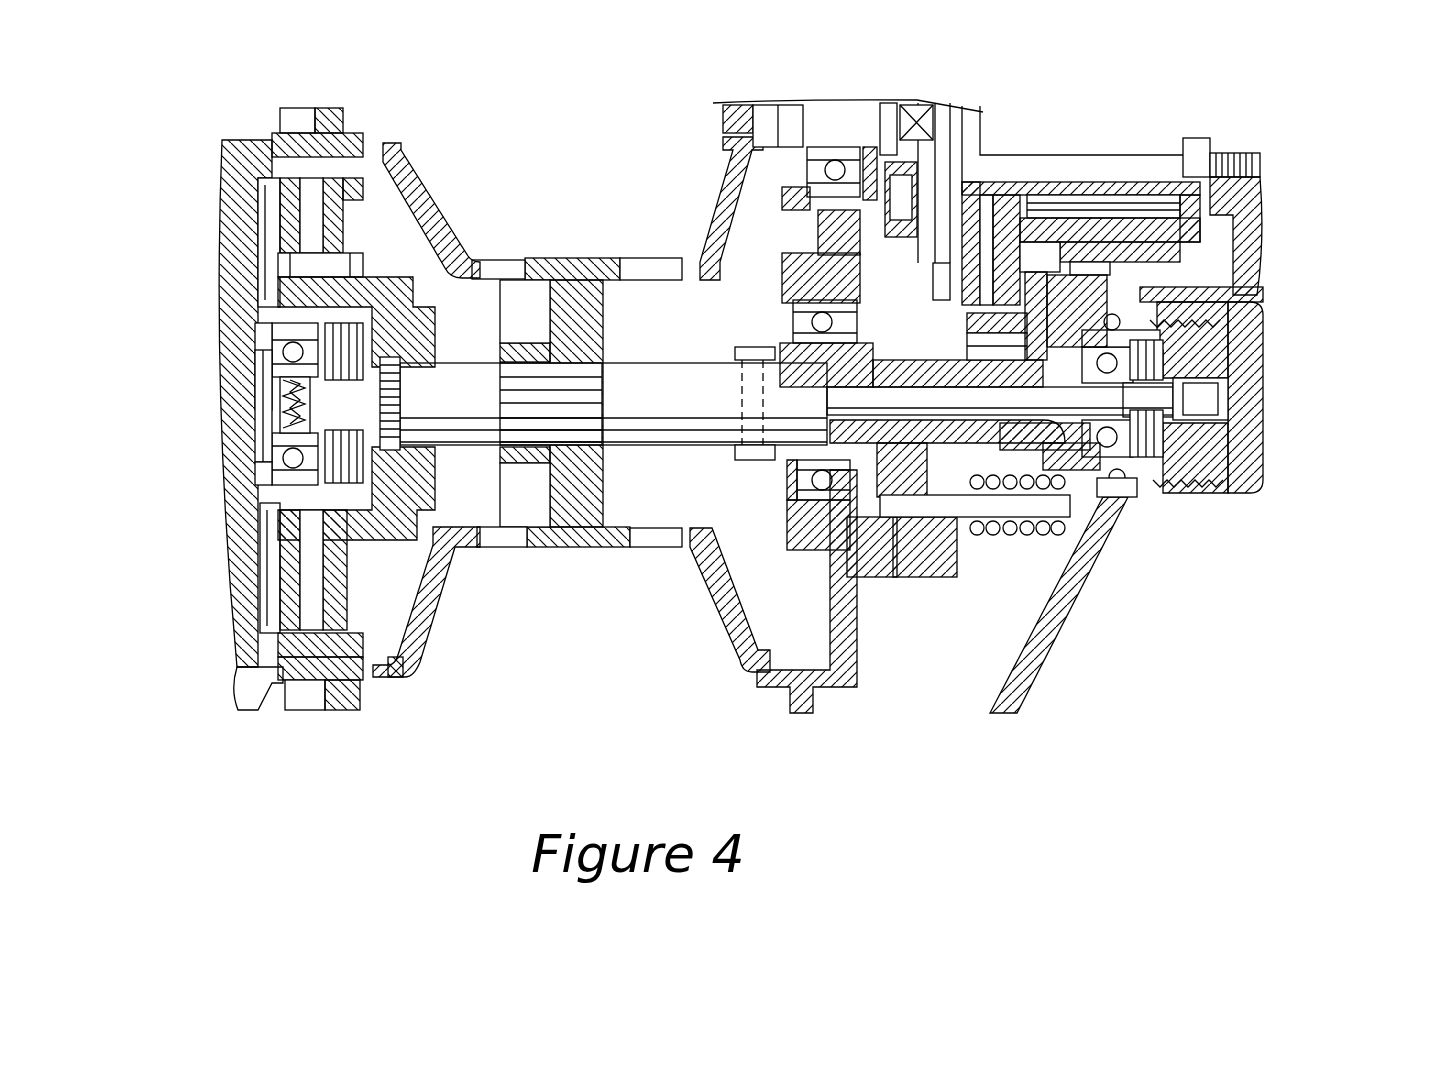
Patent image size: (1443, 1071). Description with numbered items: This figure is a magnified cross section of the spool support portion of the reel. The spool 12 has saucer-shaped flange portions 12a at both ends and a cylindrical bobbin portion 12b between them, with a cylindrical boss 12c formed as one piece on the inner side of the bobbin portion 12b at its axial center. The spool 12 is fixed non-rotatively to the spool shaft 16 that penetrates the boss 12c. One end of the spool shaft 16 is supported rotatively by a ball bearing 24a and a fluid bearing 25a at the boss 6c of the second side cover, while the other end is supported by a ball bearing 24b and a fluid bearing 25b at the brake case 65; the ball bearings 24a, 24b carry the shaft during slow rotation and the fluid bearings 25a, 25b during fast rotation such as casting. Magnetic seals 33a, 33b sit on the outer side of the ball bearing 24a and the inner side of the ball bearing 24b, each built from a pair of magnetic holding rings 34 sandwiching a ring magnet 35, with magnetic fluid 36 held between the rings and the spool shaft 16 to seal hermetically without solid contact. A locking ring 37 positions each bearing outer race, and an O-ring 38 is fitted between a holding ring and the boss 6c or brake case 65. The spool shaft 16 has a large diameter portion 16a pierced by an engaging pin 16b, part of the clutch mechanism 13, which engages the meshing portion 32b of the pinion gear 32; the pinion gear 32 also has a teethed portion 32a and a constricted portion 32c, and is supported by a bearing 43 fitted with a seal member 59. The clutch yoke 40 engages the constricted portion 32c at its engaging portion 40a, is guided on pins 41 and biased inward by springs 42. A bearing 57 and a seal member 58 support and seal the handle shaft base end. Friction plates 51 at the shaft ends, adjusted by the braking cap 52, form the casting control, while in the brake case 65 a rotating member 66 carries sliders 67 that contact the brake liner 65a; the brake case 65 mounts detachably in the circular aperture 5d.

The circular aperture 5d is at (330, 128).
The boss 6c is at (1163, 485).
The spool 12 is at (565, 258).
The flange portions 12a is at (425, 200).
The bobbin portion 12b is at (483, 260).
The boss 12c is at (545, 340).
The clutch mechanism 13 is at (605, 282).
The spool shaft 16 is at (620, 415).
The large diameter portion 16a is at (455, 410).
The engaging pin 16b is at (752, 460).
The ball bearing 24a is at (1255, 467).
The ball bearing 24b is at (262, 337).
The fluid bearing 25a is at (1153, 495).
The fluid bearing 25b is at (264, 470).
The pinion gear 32 is at (1075, 497).
The teethed portion 32a is at (1060, 520).
The meshing portion 32b is at (742, 357).
The constricted portion 32c is at (900, 372).
The magnetic seal 33a is at (1233, 445).
The magnetic seal 33b is at (330, 335).
The magnetic holding rings 34 is at (283, 345).
The ring magnet 35 is at (355, 300).
The magnetic fluid 36 is at (400, 360).
The locking ring 37 is at (266, 390).
The O-ring 38 is at (342, 262).
The clutch yoke 40 is at (940, 545).
The engaging portion 40a is at (900, 535).
The pins 41 is at (1003, 520).
The springs 42 is at (982, 533).
The bearing 43 is at (797, 463).
The friction plates 51 is at (280, 400).
The braking cap 52 is at (1247, 378).
The bearing 57 is at (820, 147).
The seal member 58 is at (898, 130).
The seal member 59 is at (835, 552).
The brake case 65 is at (258, 530).
The brake liner 65a is at (275, 680).
The rotating member 66 is at (385, 540).
The sliders 67 is at (400, 667).